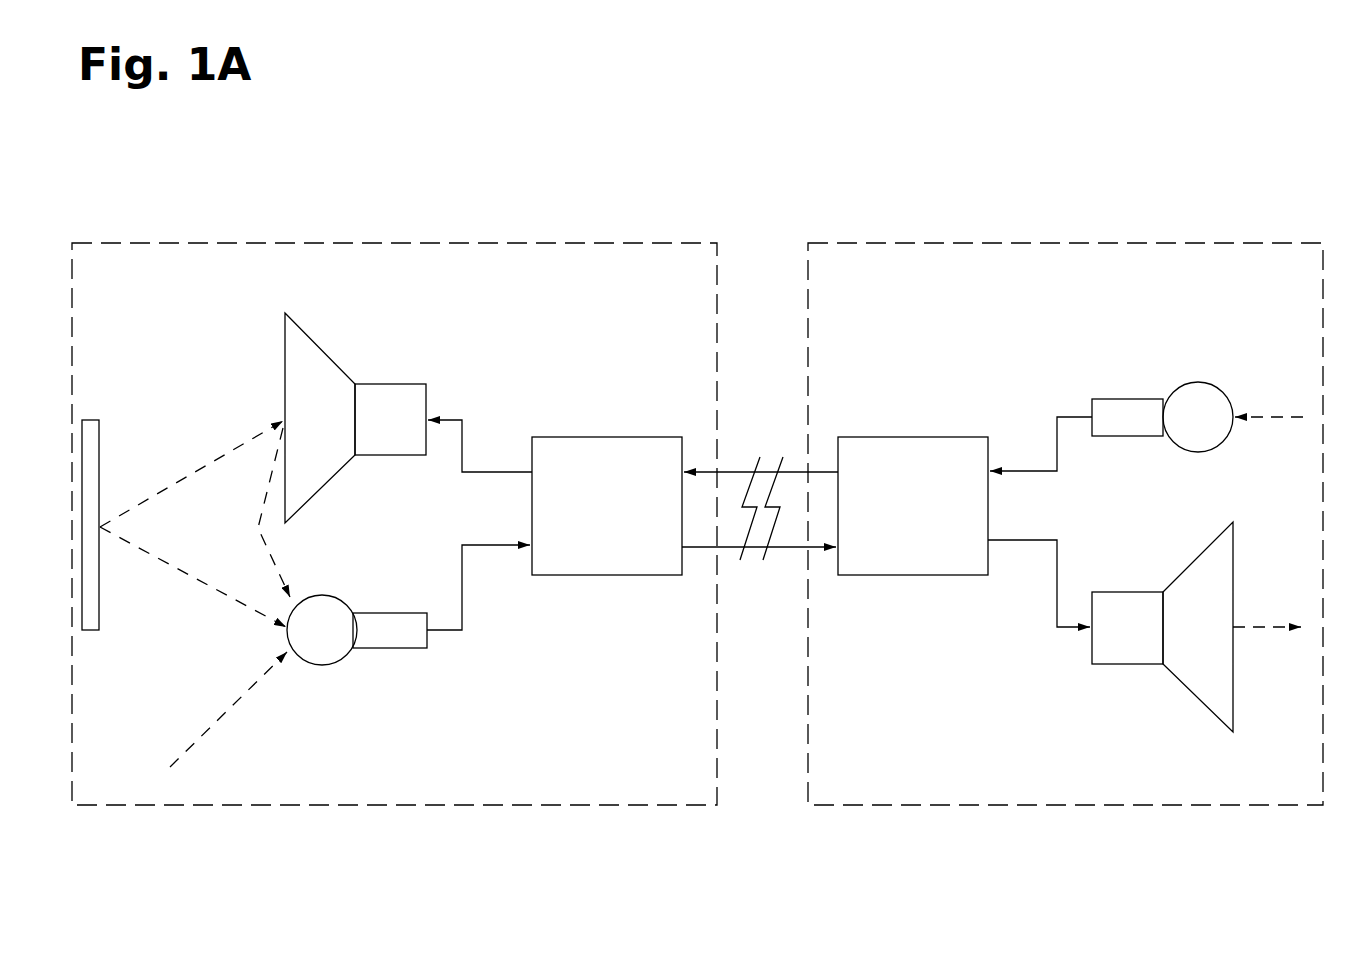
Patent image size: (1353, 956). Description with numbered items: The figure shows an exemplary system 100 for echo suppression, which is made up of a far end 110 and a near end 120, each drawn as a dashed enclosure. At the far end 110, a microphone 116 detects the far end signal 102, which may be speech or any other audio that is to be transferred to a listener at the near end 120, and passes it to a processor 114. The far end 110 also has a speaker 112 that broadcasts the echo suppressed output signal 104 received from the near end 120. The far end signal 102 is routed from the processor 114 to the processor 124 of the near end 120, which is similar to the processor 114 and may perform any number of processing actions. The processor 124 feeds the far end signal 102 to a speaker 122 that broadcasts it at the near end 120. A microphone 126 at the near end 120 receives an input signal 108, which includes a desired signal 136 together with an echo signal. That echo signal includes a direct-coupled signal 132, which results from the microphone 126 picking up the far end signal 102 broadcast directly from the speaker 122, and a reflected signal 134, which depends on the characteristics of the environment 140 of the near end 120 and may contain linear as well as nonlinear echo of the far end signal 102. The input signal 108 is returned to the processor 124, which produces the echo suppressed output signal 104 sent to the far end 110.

The system 100 is at (1140, 165).
The near end 120 is at (507, 243).
The far end 110 is at (1010, 243).
The environment 140 is at (100, 622).
The speaker 122 is at (387, 384).
The microphone 126 is at (385, 612).
The processor 124 is at (590, 437).
The far end signal 102 is at (484, 470).
The input signal 108 is at (448, 632).
The processor 114 is at (930, 437).
The microphone 116 is at (1137, 399).
The speaker 112 is at (1137, 592).
The echo suppressed output signal 104 is at (1262, 627).
The reflected signal 134 is at (196, 468).
The direct-coupled signal 132 is at (262, 528).
The desired signal 136 is at (208, 724).